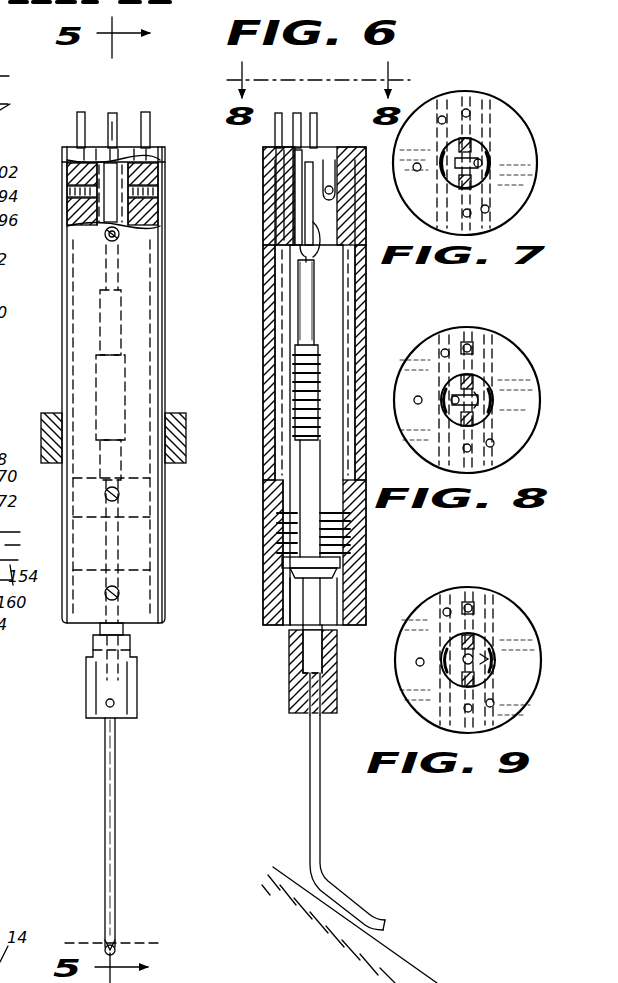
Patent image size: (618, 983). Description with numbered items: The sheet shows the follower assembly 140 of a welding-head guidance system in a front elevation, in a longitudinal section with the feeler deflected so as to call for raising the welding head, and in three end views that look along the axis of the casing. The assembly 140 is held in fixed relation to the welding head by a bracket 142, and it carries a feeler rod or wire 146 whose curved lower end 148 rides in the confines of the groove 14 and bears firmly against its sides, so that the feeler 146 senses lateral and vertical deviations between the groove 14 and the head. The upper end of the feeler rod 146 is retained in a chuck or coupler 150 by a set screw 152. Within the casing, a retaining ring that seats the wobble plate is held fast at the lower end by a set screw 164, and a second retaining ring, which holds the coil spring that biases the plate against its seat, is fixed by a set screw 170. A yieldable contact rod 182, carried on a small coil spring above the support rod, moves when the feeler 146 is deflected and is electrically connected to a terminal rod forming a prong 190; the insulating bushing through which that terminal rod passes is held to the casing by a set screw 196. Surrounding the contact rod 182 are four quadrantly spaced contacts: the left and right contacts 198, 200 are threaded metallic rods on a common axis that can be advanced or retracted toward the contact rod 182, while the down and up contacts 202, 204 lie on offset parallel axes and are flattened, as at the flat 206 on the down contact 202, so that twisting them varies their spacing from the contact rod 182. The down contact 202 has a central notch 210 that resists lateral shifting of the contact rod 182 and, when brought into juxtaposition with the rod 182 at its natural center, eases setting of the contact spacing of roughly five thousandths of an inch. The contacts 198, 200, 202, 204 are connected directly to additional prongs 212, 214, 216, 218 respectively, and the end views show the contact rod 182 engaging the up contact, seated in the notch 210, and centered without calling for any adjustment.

In FIG. 4, the groove 14 is at (116, 949).
In FIG. 6, the groove 14 is at (397, 953).
In FIG. 4, the follower assembly 140 is at (60, 371).
In FIG. 6, the follower assembly 140 is at (256, 338).
In FIG. 4, the bracket 142 is at (186, 436).
In FIG. 4, the feeler rod or wire 146 is at (116, 800).
In FIG. 6, the feeler rod or wire 146 is at (312, 788).
In FIG. 6, the curved lower end 148 is at (355, 921).
In FIG. 4, the chuck or coupler 150 is at (88, 700).
In FIG. 4, the set screw 152 is at (114, 703).
In FIG. 4, the set screw 164 is at (119, 594).
In FIG. 4, the set screw 170 is at (119, 496).
In FIG. 4, the contact rod 182 is at (99, 246).
In FIG. 6, the contact rod 182 is at (317, 247).
In FIG. 7, the contact rod 182 is at (481, 161).
In FIG. 8, the contact rod 182 is at (447, 388).
In FIG. 9, the contact rod 182 is at (474, 656).
In FIG. 4, the prong 190 is at (110, 114).
In FIG. 7, the prong 190 is at (413, 166).
In FIG. 4, the set screw 196 is at (119, 236).
In FIG. 4, the left contact 198 is at (67, 192).
In FIG. 4, the right contact 200 is at (158, 192).
In FIG. 8, the down contact 202 is at (490, 425).
In FIG. 6, the up contact 204 is at (263, 207).
In FIG. 6, the flattened portion 206 is at (329, 186).
In FIG. 8, the central notch 210 is at (493, 399).
In FIG. 4, the prong 212 is at (146, 114).
In FIG. 7, the prong 212 is at (463, 214).
In FIG. 4, the prong 214 is at (77, 129).
In FIG. 7, the prong 214 is at (470, 111).
In FIG. 7, the prong 216 is at (489, 210).
In FIG. 7, the prong 218 is at (440, 117).